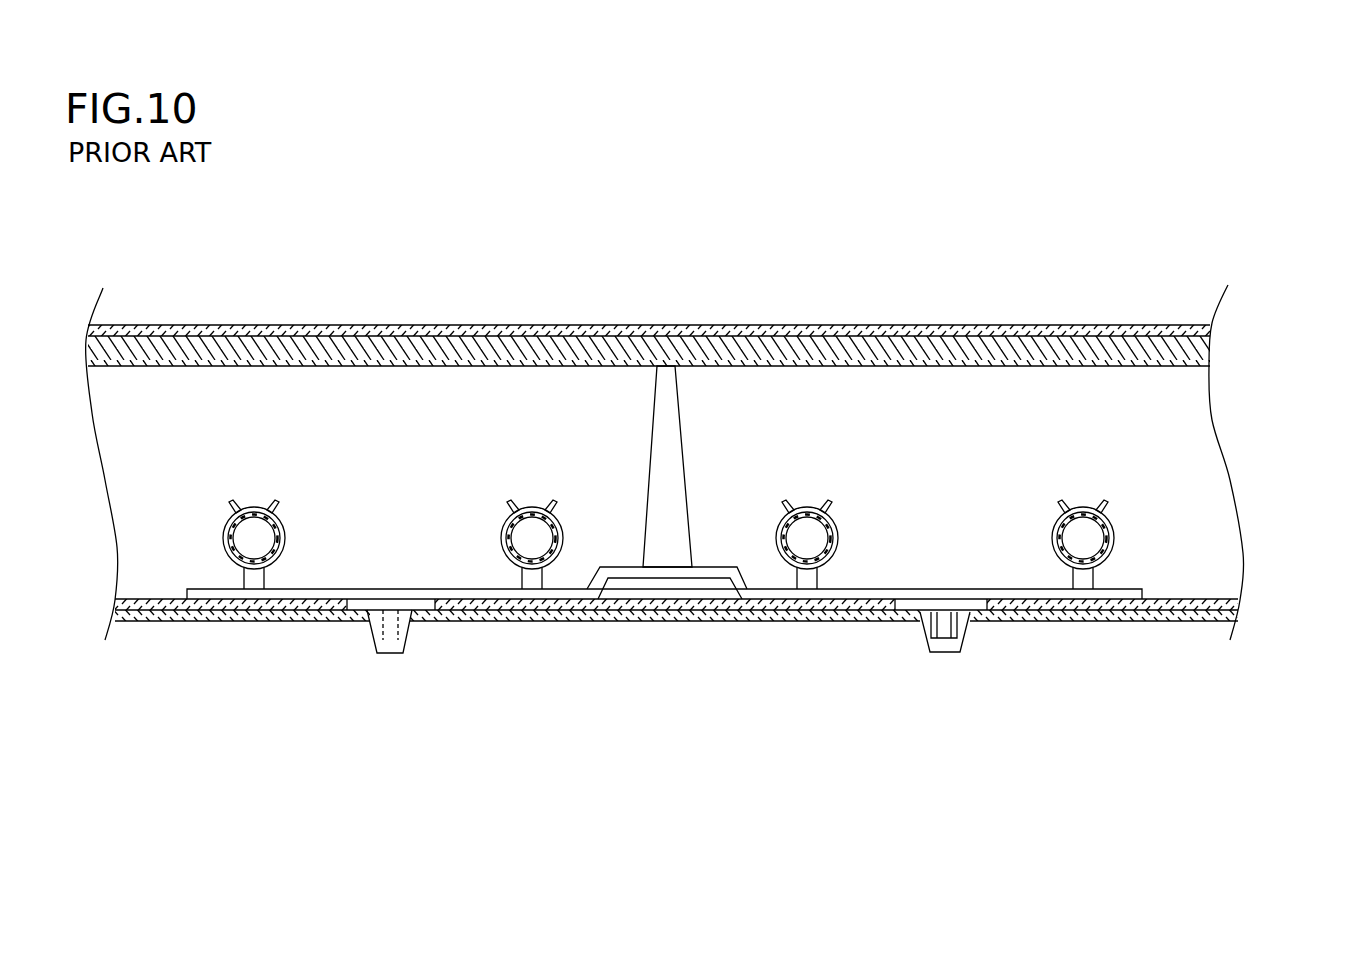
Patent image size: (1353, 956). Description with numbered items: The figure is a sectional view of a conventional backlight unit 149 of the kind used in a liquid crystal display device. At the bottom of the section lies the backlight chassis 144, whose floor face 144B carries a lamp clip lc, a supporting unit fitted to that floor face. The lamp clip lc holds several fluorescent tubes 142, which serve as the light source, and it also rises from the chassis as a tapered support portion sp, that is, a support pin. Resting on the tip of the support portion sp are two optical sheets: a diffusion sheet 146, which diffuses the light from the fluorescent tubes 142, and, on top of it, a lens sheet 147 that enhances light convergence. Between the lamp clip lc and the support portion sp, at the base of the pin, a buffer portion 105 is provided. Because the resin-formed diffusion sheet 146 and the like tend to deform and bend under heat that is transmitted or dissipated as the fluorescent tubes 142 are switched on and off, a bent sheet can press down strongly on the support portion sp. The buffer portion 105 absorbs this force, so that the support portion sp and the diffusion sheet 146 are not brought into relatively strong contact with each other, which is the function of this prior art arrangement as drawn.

The backlight unit 149 is at (1224, 253).
The lens sheet 147 is at (1207, 332).
The diffusion sheet 146 is at (1207, 354).
The fluorescent tubes 142 is at (1092, 537).
The floor face 144B is at (1229, 597).
The backlight chassis 144 is at (1233, 617).
The buffer portion 105 is at (716, 572).
The support portion sp is at (667, 466).
The lamp clip lc is at (858, 468).